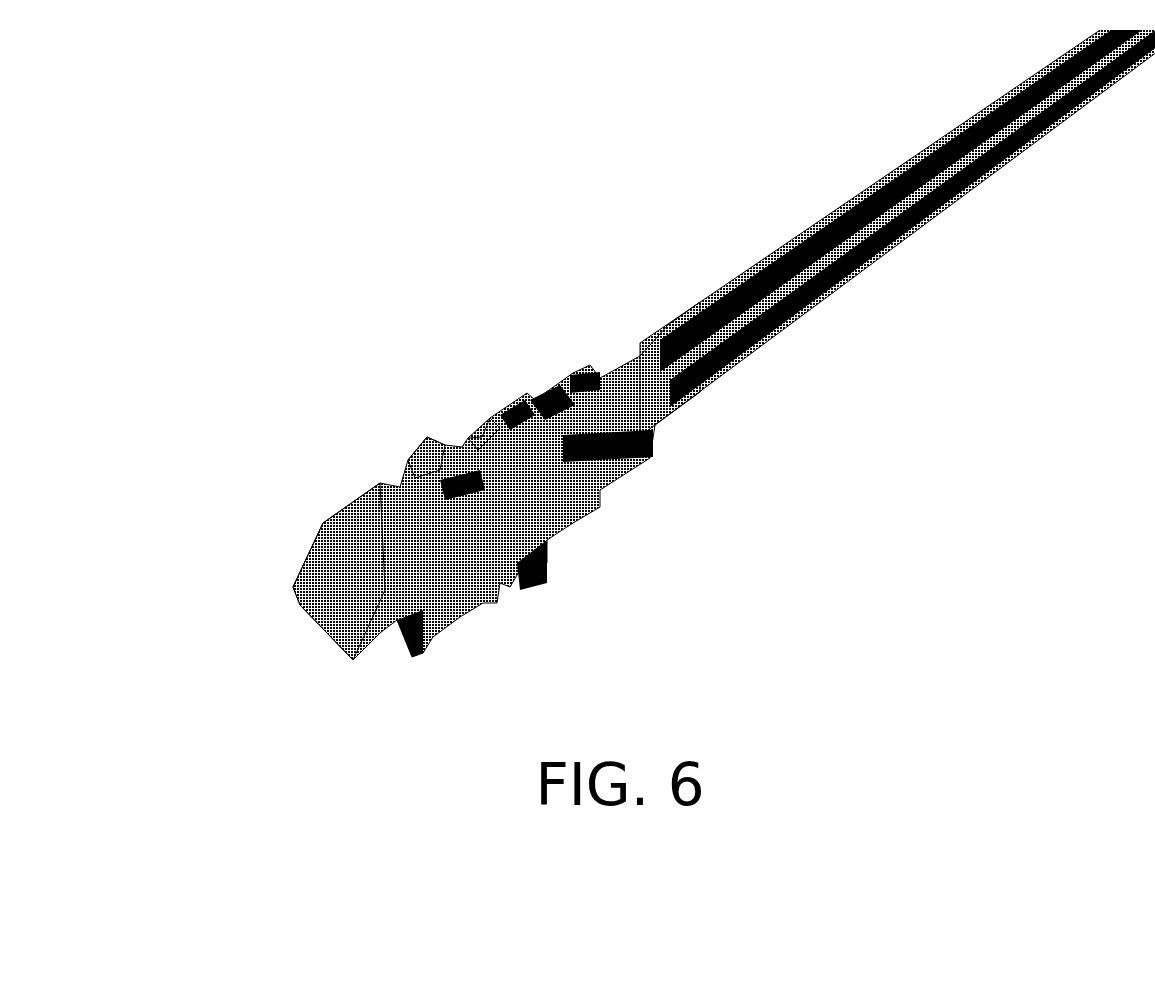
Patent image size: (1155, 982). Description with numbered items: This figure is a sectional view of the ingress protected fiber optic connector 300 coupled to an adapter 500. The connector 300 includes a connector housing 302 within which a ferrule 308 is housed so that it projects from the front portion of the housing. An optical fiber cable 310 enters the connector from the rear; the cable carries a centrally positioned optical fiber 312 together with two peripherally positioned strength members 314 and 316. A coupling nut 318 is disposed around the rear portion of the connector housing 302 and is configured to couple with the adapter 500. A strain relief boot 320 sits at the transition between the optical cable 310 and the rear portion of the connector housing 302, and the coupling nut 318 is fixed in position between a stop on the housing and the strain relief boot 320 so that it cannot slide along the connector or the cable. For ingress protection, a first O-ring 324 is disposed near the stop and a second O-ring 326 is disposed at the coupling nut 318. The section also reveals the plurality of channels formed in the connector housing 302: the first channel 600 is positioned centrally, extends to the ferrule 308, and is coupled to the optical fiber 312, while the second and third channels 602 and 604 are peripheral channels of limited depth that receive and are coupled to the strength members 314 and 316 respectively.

The fiber optic connector 300 is at (482, 240).
The connector housing 302 is at (477, 430).
The ferrule 308 is at (414, 654).
The optical fiber cable 310 is at (978, 182).
The optical fiber 312 is at (922, 182).
The strength member 314 is at (862, 202).
The strength member 316 is at (882, 235).
The coupling nut 318 is at (570, 377).
The strain relief boot 320 is at (623, 367).
The first O-ring 324 is at (477, 467).
The second O-ring 326 is at (533, 410).
The adapter 500 is at (308, 612).
The first channel 600 is at (480, 495).
The second channel 602 is at (513, 410).
The third channel 604 is at (565, 586).